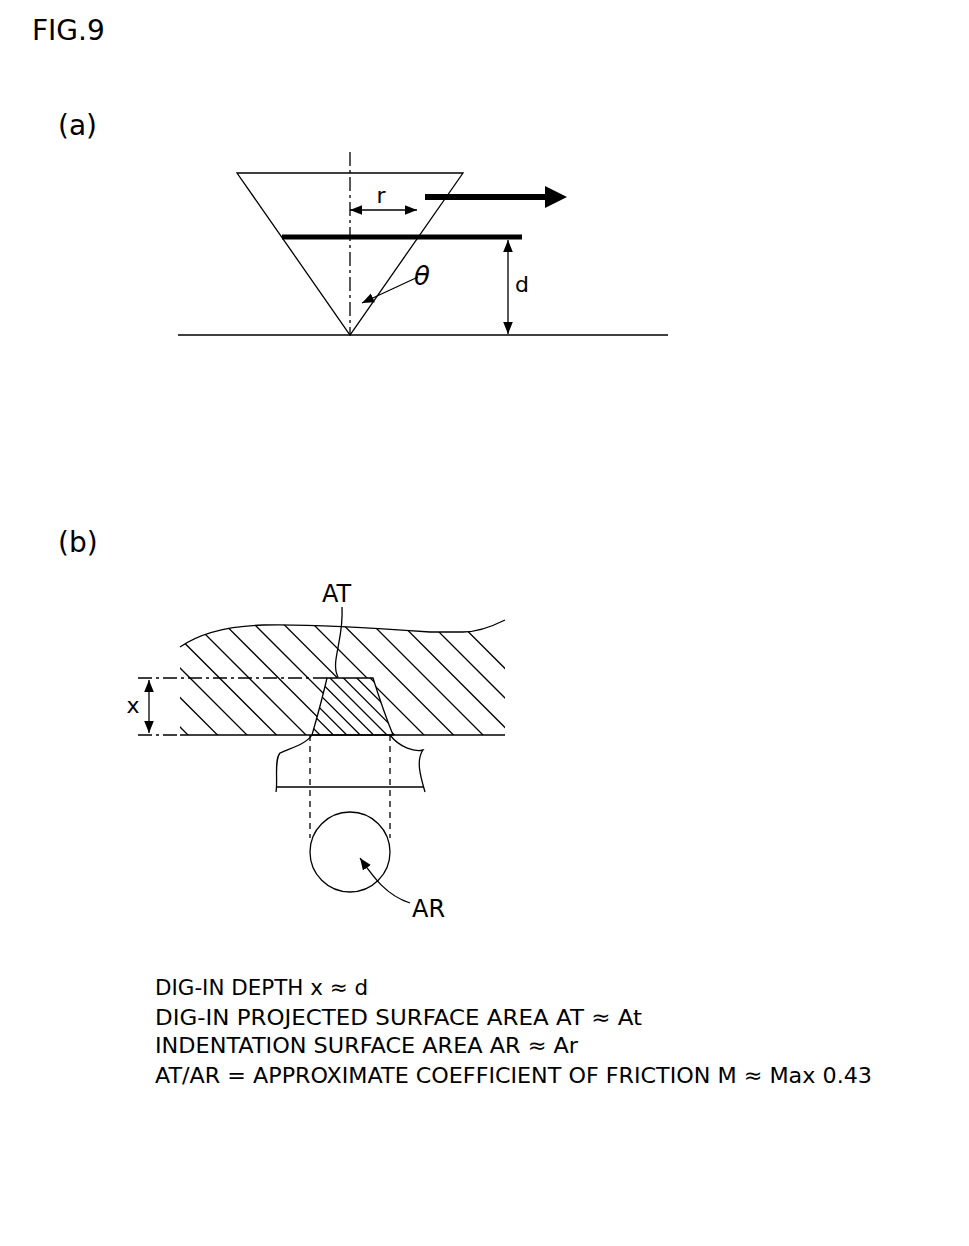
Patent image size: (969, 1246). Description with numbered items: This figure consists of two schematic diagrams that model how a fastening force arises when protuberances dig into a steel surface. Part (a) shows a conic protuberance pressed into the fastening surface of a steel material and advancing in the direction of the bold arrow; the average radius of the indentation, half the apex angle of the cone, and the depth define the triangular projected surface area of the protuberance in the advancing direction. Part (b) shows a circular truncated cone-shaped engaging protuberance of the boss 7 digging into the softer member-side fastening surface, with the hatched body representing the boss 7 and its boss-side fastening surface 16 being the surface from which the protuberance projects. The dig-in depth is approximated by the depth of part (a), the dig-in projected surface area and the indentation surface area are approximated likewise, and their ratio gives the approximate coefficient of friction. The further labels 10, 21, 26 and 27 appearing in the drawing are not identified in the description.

The boss 7 is at (487, 686).
The fastening member 10 is at (272, 783).
The boss-side fastening surface 16 is at (468, 737).
The groove portion 21 is at (405, 770).
The projection (dig-in portion) 26 is at (441, 673).
The projection (dig-in portion) 27 is at (387, 700).